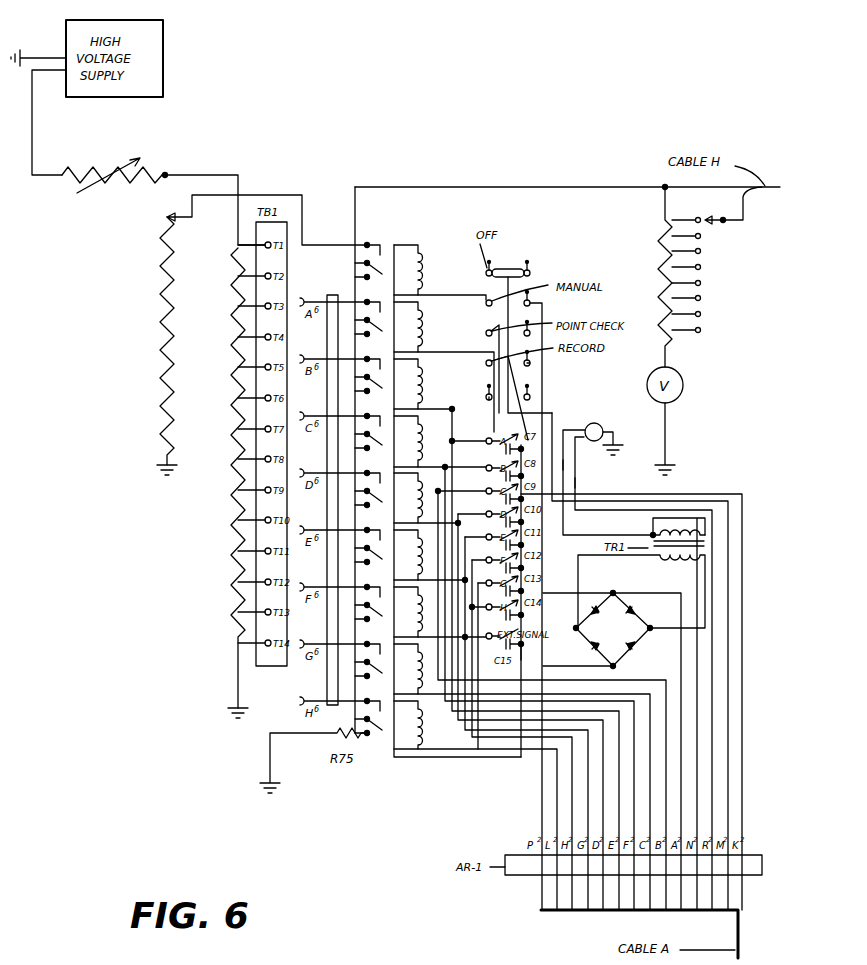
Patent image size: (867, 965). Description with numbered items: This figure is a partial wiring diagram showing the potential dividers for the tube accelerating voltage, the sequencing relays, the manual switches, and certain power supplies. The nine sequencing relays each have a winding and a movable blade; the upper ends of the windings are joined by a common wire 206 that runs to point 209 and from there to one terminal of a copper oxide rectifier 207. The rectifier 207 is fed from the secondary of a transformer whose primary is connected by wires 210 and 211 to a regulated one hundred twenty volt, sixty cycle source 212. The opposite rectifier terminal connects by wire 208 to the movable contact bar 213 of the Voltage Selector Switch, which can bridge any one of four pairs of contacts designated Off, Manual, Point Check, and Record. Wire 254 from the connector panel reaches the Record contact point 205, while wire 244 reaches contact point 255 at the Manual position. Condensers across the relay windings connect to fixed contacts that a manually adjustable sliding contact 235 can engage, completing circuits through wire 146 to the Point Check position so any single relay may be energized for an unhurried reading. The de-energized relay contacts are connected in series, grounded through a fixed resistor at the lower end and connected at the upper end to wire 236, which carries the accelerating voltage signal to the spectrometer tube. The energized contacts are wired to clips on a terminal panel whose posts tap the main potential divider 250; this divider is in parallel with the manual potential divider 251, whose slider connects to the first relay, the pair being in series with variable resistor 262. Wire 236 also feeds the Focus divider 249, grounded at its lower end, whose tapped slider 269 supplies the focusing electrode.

The variable resistor 262 is at (112, 184).
The potential divider 251 is at (160, 320).
The potential divider 250 is at (238, 340).
The wire 236 is at (520, 189).
The contact bar 213 is at (523, 268).
The contact point 255 is at (531, 304).
The contact point 205 is at (486, 365).
The sliding contact 235 is at (496, 436).
The wire 146 is at (531, 368).
The wire 208 is at (554, 412).
The regulated source 212 is at (600, 427).
The wire 210 is at (564, 467).
The wire 211 is at (576, 485).
The wire 254 is at (592, 497).
The wire 244 is at (680, 494).
The slider 269 is at (722, 223).
The potential divider 249 is at (702, 303).
The copper oxide rectifier 207 is at (640, 645).
The point 209 is at (523, 646).
The common wire 206 is at (472, 759).